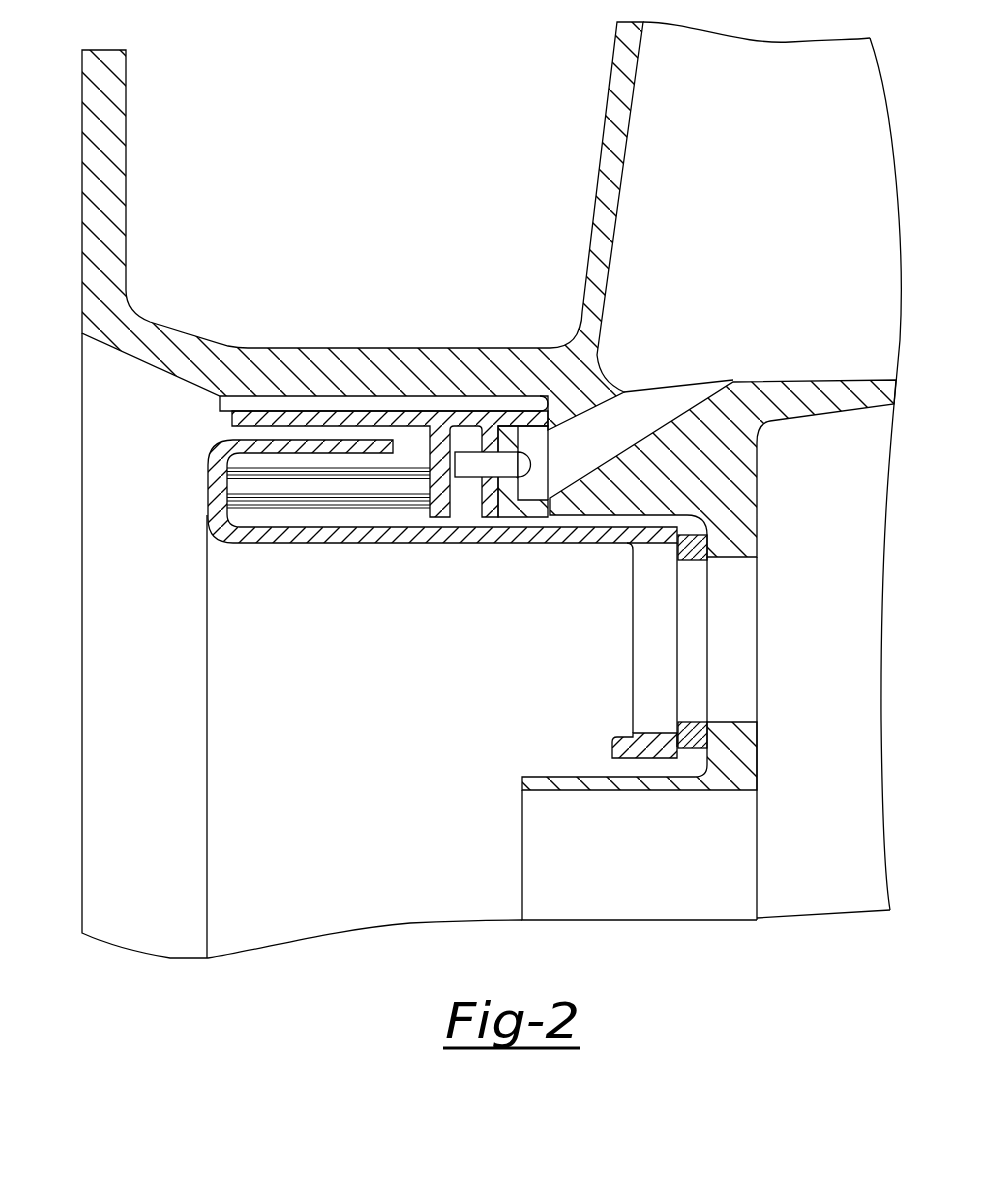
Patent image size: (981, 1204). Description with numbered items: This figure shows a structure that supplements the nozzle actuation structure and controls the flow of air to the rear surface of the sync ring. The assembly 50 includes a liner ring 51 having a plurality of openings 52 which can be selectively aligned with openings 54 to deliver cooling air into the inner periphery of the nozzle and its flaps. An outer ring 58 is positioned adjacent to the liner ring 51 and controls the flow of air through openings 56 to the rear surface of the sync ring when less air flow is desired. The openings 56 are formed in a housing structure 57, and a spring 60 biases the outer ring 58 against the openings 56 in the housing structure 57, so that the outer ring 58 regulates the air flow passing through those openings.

The assembly 50 is at (145, 678).
The liner ring 51 is at (400, 545).
The openings 52 is at (662, 733).
The openings 54 is at (737, 722).
The openings 56 is at (687, 417).
The housing structure 57 is at (587, 372).
The outer ring 58 is at (377, 410).
The spring 60 is at (253, 488).